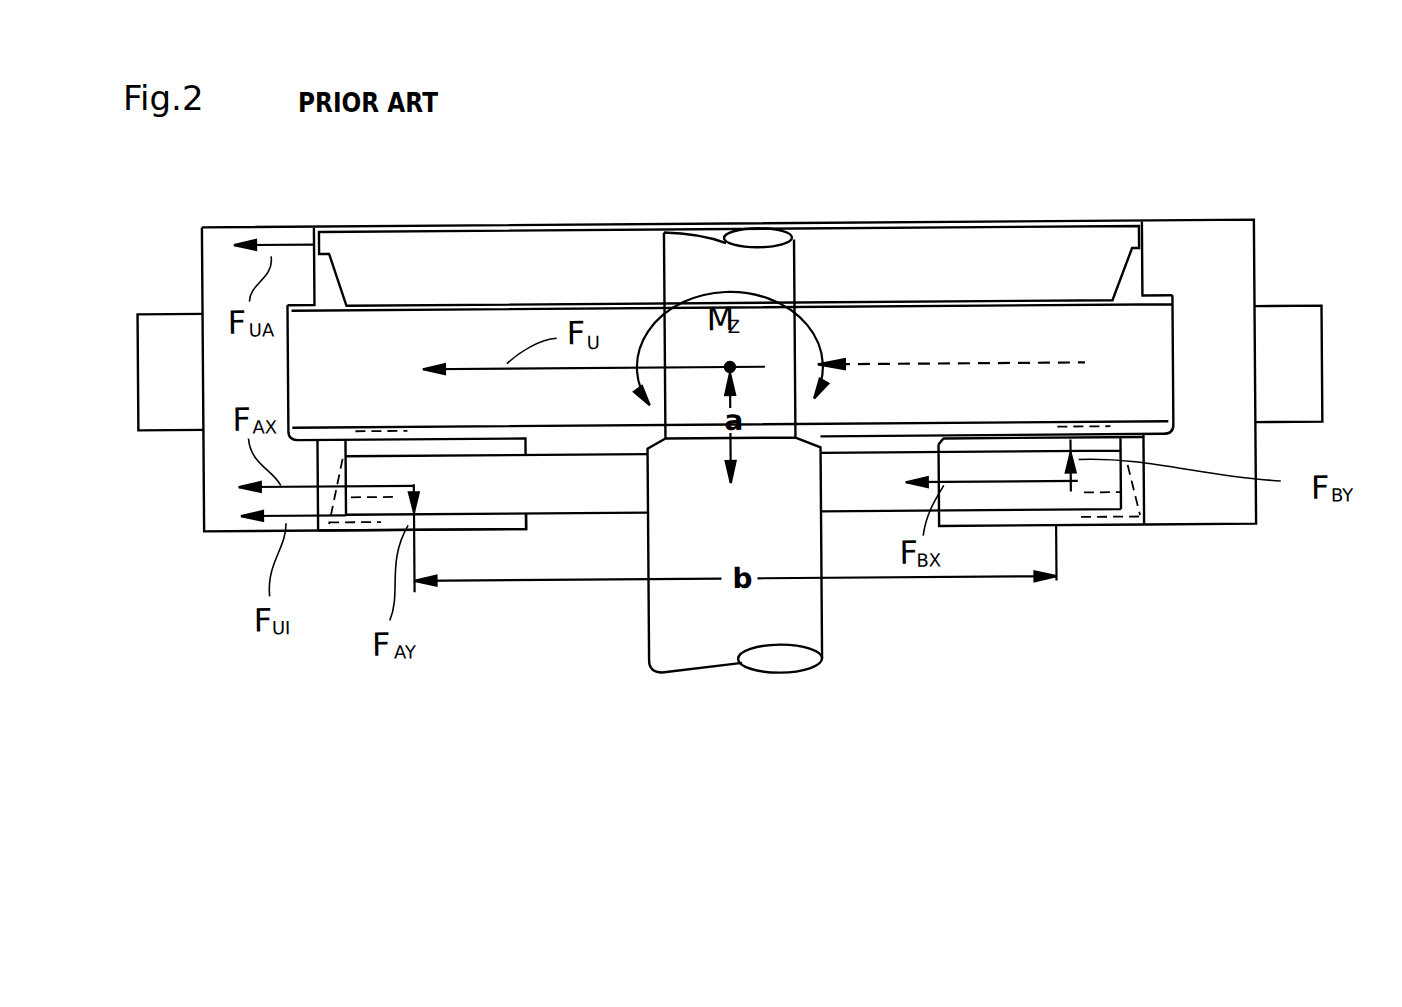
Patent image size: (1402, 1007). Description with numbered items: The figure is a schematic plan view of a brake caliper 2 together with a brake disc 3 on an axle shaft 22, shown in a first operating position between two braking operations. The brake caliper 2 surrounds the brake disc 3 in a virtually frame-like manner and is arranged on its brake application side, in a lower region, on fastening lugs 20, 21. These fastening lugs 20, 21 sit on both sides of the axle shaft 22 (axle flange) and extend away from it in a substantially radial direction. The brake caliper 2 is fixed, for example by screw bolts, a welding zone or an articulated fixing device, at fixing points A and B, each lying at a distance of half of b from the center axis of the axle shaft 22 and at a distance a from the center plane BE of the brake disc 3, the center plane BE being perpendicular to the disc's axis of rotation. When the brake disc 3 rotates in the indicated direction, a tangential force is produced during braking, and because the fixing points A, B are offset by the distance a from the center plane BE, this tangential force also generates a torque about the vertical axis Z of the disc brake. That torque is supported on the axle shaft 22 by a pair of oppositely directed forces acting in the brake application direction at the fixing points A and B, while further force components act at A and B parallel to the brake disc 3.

The brake caliper 2 is at (1222, 262).
The brake disc 3 is at (1290, 353).
The fastening lug 20 is at (467, 505).
The fastening lug 21 is at (1012, 495).
The axle shaft 22 is at (780, 632).
The fixing point A is at (402, 513).
The fixing point B is at (1078, 487).
The vertical axis Z is at (740, 357).
The center plane of the brake disc BE is at (957, 360).